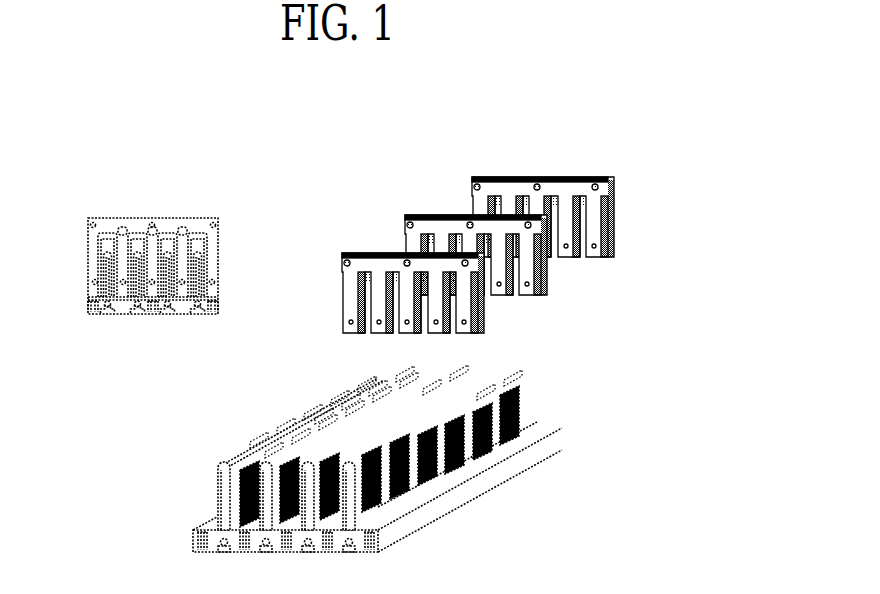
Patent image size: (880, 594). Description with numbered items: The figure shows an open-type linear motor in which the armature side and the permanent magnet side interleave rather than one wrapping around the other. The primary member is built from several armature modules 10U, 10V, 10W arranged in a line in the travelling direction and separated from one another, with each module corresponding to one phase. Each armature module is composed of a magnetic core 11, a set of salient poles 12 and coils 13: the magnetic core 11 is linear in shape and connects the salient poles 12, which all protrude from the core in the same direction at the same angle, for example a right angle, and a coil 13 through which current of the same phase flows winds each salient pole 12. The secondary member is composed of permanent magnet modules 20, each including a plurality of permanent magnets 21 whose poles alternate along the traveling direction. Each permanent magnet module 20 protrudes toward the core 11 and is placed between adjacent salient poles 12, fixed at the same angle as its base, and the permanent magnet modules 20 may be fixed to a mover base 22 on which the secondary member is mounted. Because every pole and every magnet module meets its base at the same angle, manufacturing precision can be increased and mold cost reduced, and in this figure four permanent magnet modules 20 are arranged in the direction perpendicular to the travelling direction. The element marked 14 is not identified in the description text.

The armature module 10U is at (362, 252).
The armature module 10V is at (429, 215).
The armature module 10W is at (493, 177).
The magnetic core 11 is at (118, 222).
The salient pole 12 is at (96, 266).
The coil 13 is at (184, 232).
The housing 14 is at (218, 221).
The permanent magnet module 20 is at (217, 297).
The permanent magnet 21 is at (207, 278).
The mover base 22 is at (123, 312).